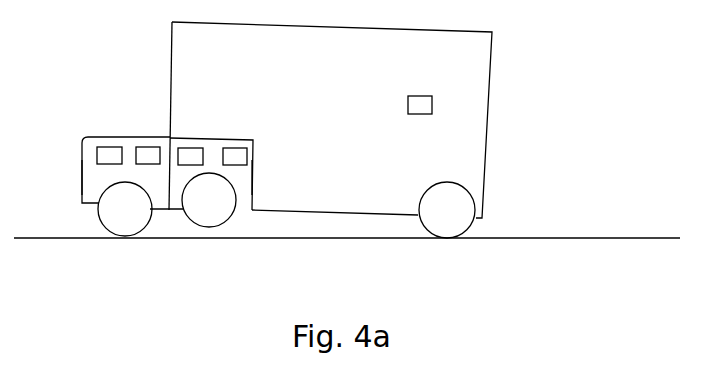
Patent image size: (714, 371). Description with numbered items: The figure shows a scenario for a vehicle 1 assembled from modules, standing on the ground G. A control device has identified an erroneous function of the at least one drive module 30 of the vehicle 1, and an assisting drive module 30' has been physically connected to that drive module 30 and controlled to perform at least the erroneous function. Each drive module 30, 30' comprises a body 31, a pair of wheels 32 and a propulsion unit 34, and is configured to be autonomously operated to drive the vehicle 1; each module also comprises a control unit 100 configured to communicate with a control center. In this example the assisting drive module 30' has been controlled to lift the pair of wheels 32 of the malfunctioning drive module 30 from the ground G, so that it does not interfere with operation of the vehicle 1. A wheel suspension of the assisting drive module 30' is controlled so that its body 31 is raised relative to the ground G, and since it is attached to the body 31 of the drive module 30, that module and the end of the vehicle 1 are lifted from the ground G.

The vehicle 1 is at (357, 120).
The drive module 30 is at (211, 121).
The assisting drive module 30' is at (109, 123).
The body 31 is at (174, 177).
The pair of wheels 32 is at (286, 219).
The propulsion unit 34 is at (116, 146).
The control unit 100 is at (141, 146).
The ground G is at (347, 266).